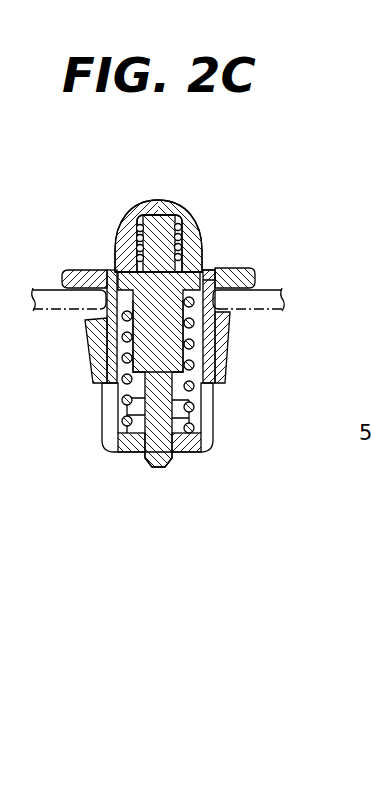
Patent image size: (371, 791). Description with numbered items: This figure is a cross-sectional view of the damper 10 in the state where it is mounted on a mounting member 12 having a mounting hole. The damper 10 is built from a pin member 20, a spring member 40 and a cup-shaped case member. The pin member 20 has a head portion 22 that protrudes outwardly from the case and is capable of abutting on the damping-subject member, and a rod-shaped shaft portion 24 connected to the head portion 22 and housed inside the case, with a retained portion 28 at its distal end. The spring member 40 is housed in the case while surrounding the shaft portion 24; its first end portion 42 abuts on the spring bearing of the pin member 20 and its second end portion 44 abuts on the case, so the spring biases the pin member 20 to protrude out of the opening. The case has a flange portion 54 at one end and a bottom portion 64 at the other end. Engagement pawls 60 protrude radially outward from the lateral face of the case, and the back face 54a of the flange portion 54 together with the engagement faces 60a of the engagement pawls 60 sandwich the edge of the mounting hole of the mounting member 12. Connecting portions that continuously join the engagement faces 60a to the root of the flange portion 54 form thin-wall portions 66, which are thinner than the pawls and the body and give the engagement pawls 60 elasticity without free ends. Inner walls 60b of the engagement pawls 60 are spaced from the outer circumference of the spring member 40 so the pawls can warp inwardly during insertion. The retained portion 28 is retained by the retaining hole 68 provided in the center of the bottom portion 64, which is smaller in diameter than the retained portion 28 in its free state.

The damper 10 is at (175, 561).
The mounting member 12 is at (268, 292).
The pin member 20 is at (157, 292).
The head portion 22 is at (152, 200).
The shaft portion 24 is at (172, 360).
The retained portion 28 is at (170, 466).
The spring member 40 is at (168, 350).
The first end portion 42 is at (124, 296).
The second end portion 44 is at (193, 430).
The flange portion 54 is at (52, 268).
The back face 54a is at (243, 270).
The engagement pawl 60 is at (86, 321).
The engagement face 60a is at (230, 316).
The inner wall 60b is at (88, 356).
The bottom portion 64 is at (125, 455).
The thin-wall portion 66 is at (213, 271).
The retaining hole 68 is at (135, 456).